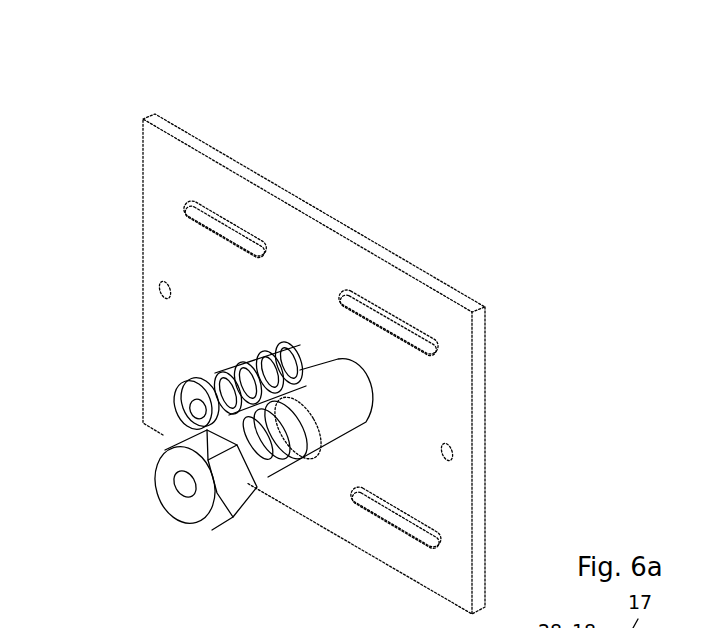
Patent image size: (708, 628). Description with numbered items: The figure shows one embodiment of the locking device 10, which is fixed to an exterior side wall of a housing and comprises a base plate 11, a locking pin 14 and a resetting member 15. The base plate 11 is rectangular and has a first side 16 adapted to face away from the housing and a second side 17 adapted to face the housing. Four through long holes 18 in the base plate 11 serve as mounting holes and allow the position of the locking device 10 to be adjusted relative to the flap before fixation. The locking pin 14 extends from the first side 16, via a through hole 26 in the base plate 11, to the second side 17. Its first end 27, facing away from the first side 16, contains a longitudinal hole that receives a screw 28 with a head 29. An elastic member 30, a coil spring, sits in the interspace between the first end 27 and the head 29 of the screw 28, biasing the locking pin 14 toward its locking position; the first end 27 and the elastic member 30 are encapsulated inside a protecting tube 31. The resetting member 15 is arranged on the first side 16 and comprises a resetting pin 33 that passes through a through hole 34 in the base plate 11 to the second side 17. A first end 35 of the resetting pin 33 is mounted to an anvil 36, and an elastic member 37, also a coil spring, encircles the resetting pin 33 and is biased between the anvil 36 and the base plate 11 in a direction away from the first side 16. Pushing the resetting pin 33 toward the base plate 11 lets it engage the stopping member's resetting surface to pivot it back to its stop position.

The locking device 10 is at (306, 318).
The base plate 11 is at (362, 360).
The locking pin 14 is at (360, 352).
The resetting member 15 is at (270, 226).
The first side 16 is at (362, 364).
The second side 17 is at (527, 438).
The through long holes 18 is at (293, 303).
The through hole 26 is at (360, 362).
The first end 27 is at (293, 508).
The screw 28 is at (201, 529).
The head 29 is at (201, 480).
The elastic member 30 is at (267, 515).
The protecting tube 31 is at (320, 486).
The resetting pin 33 is at (148, 253).
The through hole 34 is at (270, 235).
The first end 35 is at (128, 313).
The anvil 36 is at (197, 403).
The elastic member 37 is at (172, 234).